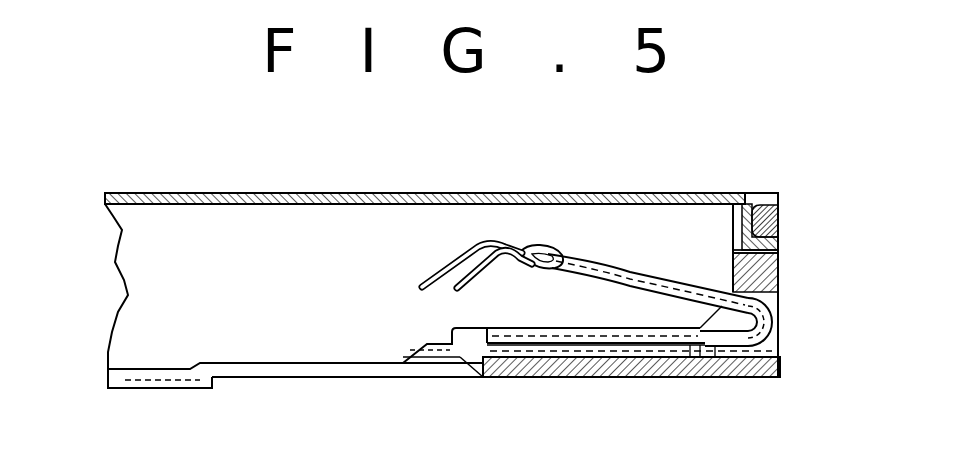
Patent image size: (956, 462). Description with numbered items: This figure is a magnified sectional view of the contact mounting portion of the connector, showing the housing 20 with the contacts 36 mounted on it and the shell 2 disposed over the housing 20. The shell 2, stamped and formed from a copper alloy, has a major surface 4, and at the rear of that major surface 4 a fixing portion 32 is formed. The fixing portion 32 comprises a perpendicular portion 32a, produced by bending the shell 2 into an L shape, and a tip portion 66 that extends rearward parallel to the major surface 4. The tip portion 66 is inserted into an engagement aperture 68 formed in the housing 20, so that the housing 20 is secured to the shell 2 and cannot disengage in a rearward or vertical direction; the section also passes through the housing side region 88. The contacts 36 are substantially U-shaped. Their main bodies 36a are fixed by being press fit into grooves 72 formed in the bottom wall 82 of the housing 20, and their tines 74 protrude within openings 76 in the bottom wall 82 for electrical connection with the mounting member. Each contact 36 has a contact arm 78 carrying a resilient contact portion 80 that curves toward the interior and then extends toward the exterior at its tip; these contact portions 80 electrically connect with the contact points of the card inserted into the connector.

The shell 2 is at (194, 174).
The major surface 4 is at (336, 193).
The housing wall 88 is at (148, 256).
The fixing portion 32 is at (742, 222).
The perpendicular portion 32a is at (778, 213).
The engagement aperture 68 is at (733, 247).
The tip portion 66 is at (778, 240).
The openings 76 is at (365, 378).
The bottom wall 82 is at (558, 378).
The tines 74 is at (463, 378).
The grooves 72 is at (606, 378).
The main bodies 36a is at (545, 335).
The housing 20 is at (782, 285).
The contact arms 78 is at (600, 258).
The contacts 36 is at (544, 240).
The contact portions 80 is at (470, 243).